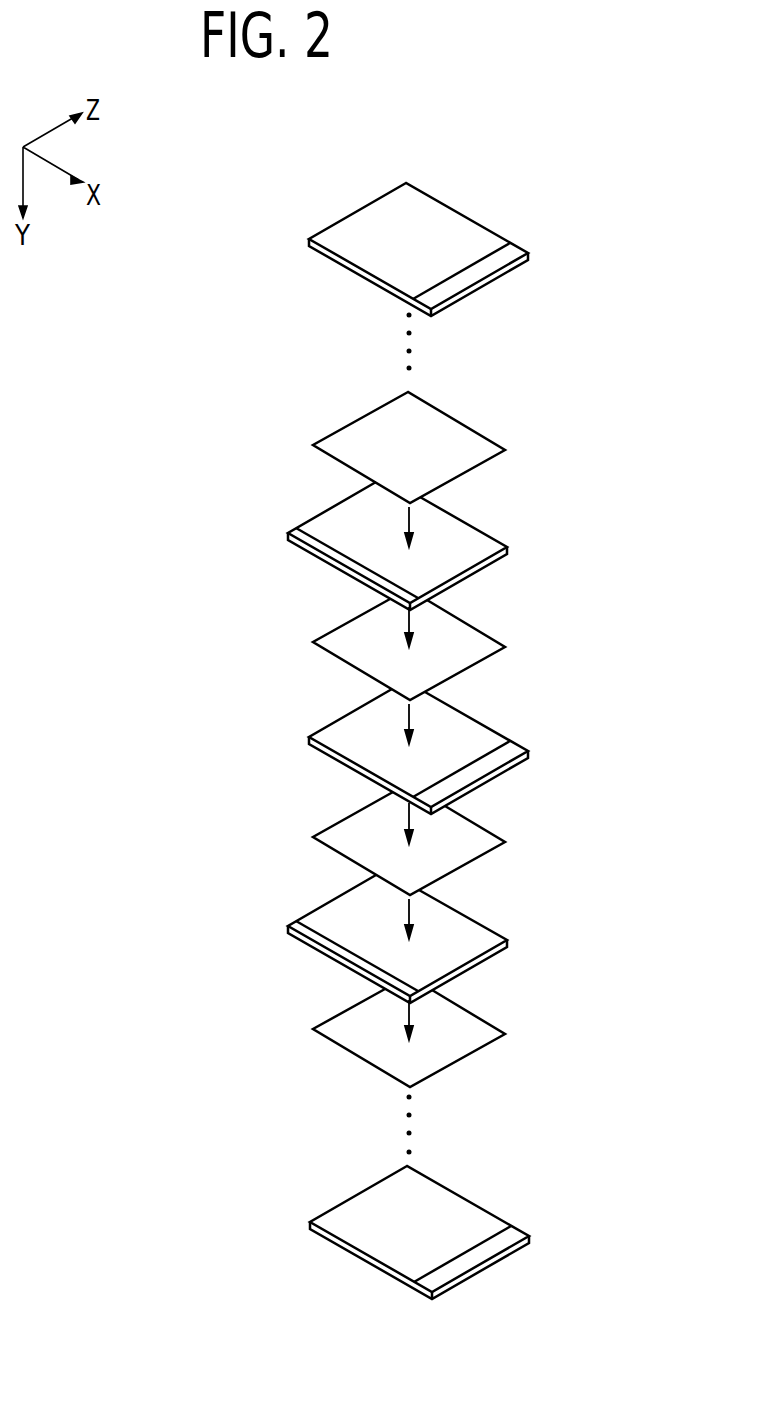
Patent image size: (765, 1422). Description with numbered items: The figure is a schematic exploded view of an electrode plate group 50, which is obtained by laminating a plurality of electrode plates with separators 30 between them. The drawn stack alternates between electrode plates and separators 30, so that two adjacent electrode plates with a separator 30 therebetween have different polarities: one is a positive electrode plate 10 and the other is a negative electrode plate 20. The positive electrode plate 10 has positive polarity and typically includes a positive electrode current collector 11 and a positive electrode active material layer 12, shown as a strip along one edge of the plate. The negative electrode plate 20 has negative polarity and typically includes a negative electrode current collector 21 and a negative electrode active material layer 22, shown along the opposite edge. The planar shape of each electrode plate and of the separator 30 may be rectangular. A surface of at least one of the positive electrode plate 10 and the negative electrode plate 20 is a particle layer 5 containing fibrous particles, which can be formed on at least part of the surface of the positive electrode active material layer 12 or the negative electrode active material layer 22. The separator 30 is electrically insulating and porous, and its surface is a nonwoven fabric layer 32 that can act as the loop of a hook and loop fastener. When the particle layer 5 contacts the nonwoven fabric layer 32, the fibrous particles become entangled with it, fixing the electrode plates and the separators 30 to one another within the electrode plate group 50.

The particle layer 5 is at (462, 762).
The positive electrode plate 10 is at (368, 746).
The positive electrode current collector 11 is at (299, 532).
The positive electrode active material layer 12 is at (347, 551).
The negative electrode plate 20 is at (454, 734).
The negative electrode current collector 21 is at (507, 242).
The negative electrode active material layer 22 is at (480, 740).
The separator 30 is at (455, 739).
The nonwoven fabric layer 32 is at (489, 449).
The electrode plate group 50 is at (208, 218).